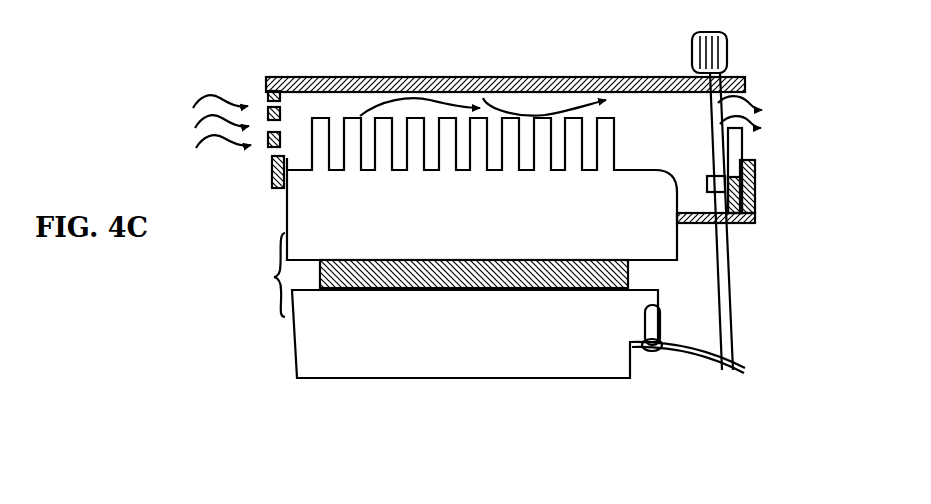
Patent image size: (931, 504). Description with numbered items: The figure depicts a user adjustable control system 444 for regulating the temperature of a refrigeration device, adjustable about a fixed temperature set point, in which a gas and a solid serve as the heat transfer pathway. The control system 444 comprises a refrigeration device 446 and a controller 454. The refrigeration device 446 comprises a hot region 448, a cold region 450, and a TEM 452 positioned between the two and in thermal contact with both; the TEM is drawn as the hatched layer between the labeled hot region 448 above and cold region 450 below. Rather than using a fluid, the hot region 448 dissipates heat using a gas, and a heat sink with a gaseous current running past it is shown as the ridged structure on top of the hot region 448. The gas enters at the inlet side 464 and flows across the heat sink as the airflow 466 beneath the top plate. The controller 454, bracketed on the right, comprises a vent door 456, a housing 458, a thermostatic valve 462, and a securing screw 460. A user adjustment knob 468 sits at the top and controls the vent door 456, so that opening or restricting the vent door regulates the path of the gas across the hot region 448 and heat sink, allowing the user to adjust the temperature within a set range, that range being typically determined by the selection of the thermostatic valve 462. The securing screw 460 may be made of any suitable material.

The user adjustable control system 444 is at (418, 35).
The refrigeration device 446 is at (259, 275).
The hot region 448 is at (482, 189).
The cold region 450 is at (475, 334).
The TEM 452 is at (515, 260).
The controller 454 is at (810, 362).
The vent door 456 is at (743, 148).
The housing 458 is at (748, 225).
The securing screw 460 is at (660, 308).
The thermostatic valve 462 is at (700, 353).
The air inlet 464 is at (257, 78).
The airflow 466 is at (490, 98).
The user adjustment knob 468 is at (727, 45).